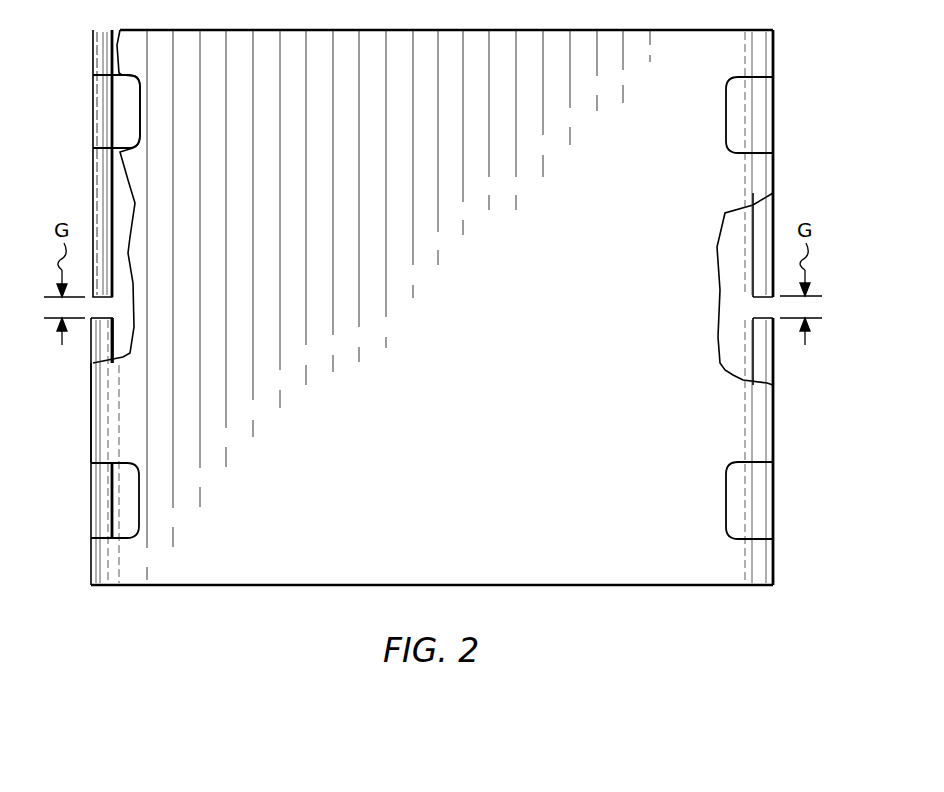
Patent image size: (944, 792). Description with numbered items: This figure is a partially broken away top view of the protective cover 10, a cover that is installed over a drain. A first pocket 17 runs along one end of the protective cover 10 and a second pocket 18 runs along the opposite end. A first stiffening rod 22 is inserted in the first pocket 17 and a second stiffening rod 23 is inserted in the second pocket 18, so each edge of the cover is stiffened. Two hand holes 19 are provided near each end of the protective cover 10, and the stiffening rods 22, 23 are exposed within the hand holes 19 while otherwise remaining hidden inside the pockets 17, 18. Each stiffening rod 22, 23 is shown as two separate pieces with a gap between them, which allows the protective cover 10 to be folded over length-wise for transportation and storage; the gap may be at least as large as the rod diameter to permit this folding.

The protective cover 10 is at (446, 379).
The first pocket 17 is at (763, 418).
The second pocket 18 is at (101, 410).
The hand holes 19 is at (138, 115).
The first stiffening rod 22 is at (760, 130).
The second stiffening rod 23 is at (103, 183).